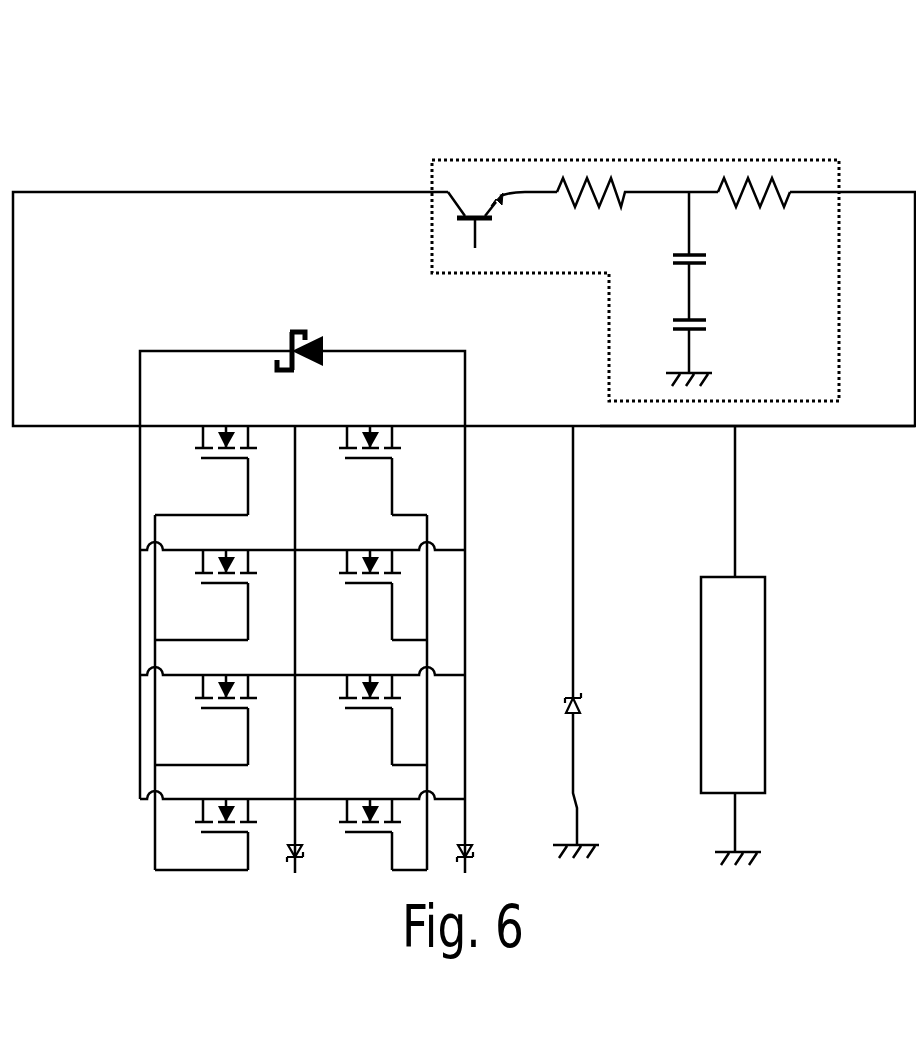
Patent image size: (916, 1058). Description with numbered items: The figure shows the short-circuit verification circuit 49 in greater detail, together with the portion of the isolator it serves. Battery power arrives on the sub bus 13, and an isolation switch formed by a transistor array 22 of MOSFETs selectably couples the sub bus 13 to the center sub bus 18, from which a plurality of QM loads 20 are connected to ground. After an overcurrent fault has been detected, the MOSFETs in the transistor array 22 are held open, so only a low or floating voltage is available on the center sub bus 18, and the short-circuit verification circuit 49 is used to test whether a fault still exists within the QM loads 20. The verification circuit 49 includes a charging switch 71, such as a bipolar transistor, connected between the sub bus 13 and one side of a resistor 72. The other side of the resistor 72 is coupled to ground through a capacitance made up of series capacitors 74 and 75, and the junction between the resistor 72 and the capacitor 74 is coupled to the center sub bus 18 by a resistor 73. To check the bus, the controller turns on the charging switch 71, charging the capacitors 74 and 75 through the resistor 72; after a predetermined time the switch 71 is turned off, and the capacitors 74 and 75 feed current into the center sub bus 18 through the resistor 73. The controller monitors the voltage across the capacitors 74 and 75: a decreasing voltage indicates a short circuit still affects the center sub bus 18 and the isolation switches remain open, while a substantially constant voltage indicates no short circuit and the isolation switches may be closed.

The sub bus 13 is at (80, 420).
The center sub bus 18 is at (873, 424).
The QM loads 20 is at (765, 628).
The transistor array 22 is at (117, 657).
The short-circuit verification circuit 49 is at (667, 158).
The charging switch 71 is at (458, 197).
The resistor 72 is at (577, 183).
The resistor 73 is at (757, 180).
The capacitor 74 is at (684, 254).
The capacitor 75 is at (700, 315).